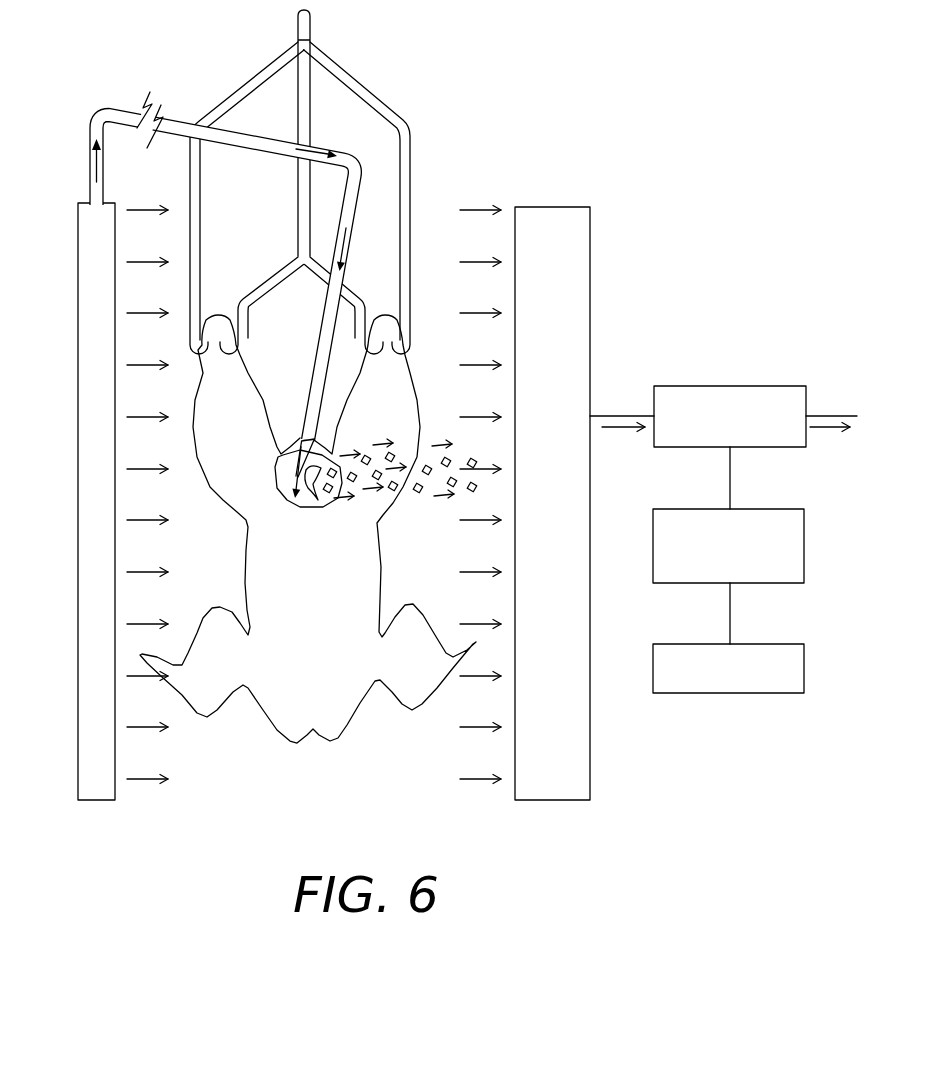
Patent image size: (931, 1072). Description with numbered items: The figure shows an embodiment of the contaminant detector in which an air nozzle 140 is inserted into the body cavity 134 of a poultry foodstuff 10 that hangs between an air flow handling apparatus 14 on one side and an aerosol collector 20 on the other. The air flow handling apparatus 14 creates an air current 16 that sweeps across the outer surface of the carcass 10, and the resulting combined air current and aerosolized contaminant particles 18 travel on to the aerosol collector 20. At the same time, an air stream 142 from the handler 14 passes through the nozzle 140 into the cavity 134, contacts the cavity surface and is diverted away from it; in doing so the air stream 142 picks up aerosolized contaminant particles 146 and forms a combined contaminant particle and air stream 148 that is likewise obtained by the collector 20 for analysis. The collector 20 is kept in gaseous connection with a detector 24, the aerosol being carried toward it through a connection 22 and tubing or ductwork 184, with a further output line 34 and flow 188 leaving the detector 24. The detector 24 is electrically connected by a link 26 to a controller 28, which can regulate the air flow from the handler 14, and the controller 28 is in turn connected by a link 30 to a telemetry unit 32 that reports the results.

The foodstuff 10 is at (297, 743).
The air flow handling apparatus 14 is at (85, 202).
The air current 16 is at (133, 210).
The combined air current/aerosolized contaminant particles 18 is at (480, 210).
The aerosol collector 20 is at (558, 206).
The signal line to detector 22 is at (599, 415).
The detector 24 is at (772, 386).
The connection detector to controller 26 is at (731, 483).
The controller 28 is at (768, 509).
The connection controller to telemetry 30 is at (731, 634).
The telemetry 32 is at (765, 644).
The output line 34 is at (817, 415).
The body cavity 134 is at (282, 468).
The air nozzle 140 is at (118, 107).
The air stream 142 is at (92, 167).
The aerosolized contaminant particles 146 is at (320, 505).
The combined contaminant particle/air stream 148 is at (411, 502).
The tubing or ductwork 184 is at (613, 428).
The output signal 188 is at (813, 430).